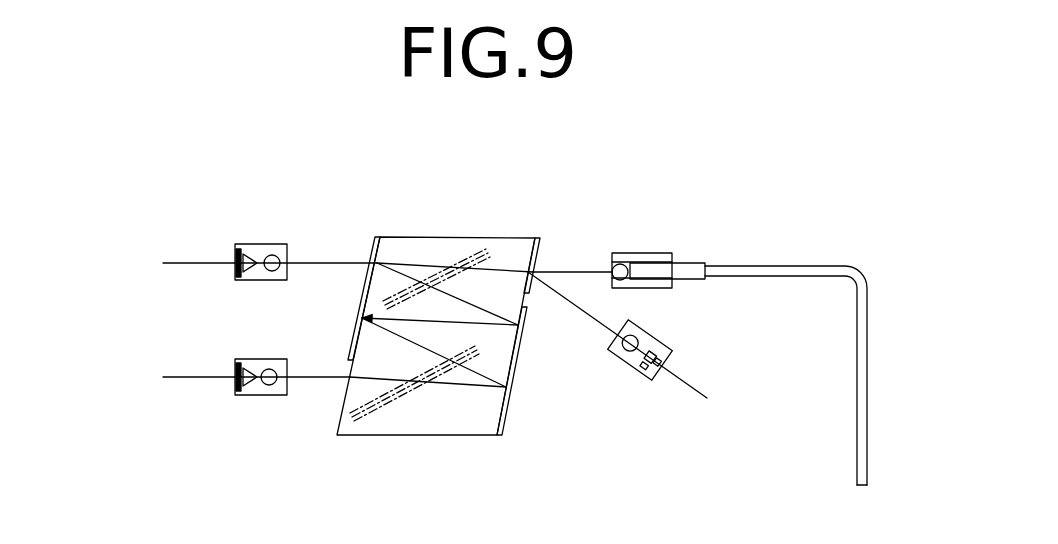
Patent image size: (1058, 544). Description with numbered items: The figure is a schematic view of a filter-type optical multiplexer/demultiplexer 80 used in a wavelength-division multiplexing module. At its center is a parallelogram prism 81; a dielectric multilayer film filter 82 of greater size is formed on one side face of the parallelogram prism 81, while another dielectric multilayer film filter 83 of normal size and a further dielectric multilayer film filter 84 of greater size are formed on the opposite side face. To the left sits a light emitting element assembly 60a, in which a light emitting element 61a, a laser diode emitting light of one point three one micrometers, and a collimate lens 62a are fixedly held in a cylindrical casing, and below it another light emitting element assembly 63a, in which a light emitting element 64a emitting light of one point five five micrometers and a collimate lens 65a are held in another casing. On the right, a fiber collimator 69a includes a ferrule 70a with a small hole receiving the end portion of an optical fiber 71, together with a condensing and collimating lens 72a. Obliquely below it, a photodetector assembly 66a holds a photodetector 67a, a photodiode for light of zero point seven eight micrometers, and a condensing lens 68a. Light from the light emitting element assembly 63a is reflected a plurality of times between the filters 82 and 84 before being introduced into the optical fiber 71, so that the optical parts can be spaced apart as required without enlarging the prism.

The light emitting element assembly 60a is at (254, 206).
The light emitting element 61a is at (238, 255).
The collimate lens 62a is at (276, 257).
The light emitting element assembly 63a is at (219, 398).
The light emitting element 64a is at (241, 391).
The collimate lens 65a is at (268, 369).
The photodetector assembly 66a is at (693, 344).
The photodetector 67a is at (664, 362).
The condensing lens 68a is at (635, 338).
The fiber collimator 69a is at (670, 229).
The ferrule 70a is at (695, 262).
The optical fiber 71 is at (868, 295).
The condensing and collimating lens 72a is at (617, 259).
The optical multiplexer/demultiplexer 80 is at (432, 322).
The parallelogram prism 81 is at (425, 240).
The dielectric multilayer film filter 82 is at (360, 307).
The dielectric multilayer film filter 83 is at (543, 245).
The dielectric multilayer film filter 84 is at (503, 436).